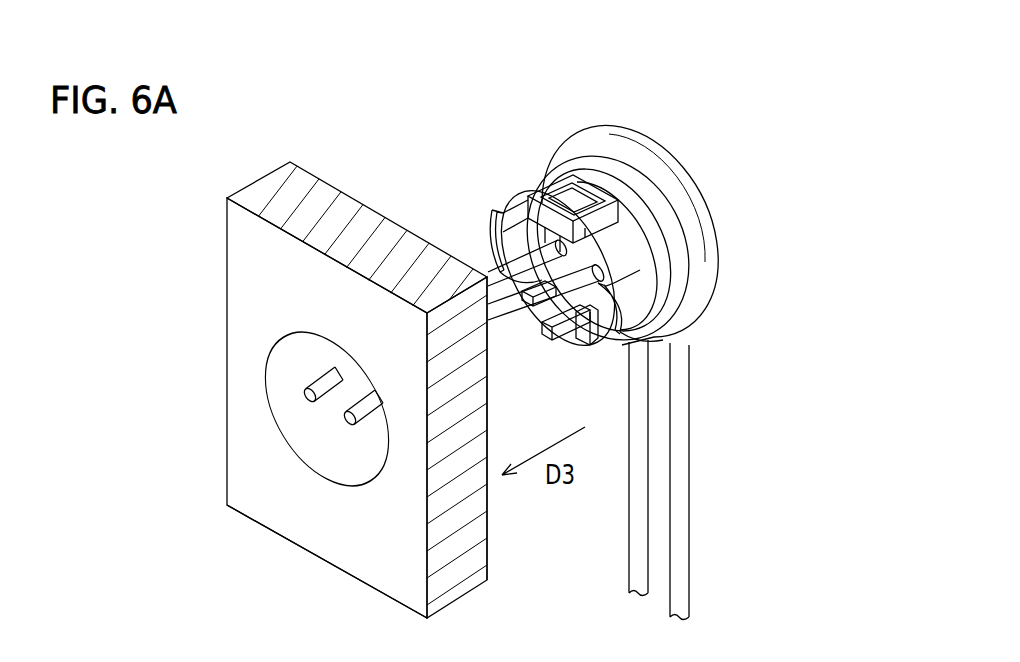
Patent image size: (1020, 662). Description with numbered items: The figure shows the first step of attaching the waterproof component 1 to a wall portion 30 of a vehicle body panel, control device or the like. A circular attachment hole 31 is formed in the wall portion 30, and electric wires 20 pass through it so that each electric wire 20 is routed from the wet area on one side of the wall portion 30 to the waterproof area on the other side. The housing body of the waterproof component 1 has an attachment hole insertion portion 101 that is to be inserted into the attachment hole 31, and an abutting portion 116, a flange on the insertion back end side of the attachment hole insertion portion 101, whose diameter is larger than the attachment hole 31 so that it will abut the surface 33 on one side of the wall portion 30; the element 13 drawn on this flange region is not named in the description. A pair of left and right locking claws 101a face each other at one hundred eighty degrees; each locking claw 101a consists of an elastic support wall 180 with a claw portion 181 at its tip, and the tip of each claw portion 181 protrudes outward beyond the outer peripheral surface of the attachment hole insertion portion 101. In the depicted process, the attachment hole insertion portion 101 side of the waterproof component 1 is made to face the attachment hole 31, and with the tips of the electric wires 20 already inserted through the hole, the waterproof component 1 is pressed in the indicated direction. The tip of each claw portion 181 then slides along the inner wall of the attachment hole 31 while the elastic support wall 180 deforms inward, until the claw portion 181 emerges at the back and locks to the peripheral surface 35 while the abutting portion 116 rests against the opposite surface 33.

The waterproof component 1 is at (585, 224).
The flange 13 is at (637, 265).
The electric wire 20 is at (307, 396).
The wall portion 30 is at (320, 222).
The attachment hole 31 is at (338, 455).
The surface 33 is at (488, 550).
The peripheral surface 35 is at (395, 570).
The attachment hole insertion portion 101 is at (610, 165).
The locking claw 101a is at (483, 217).
The abutting portion 116 is at (698, 277).
The elastic support wall 180 is at (523, 207).
The claw portion 181 is at (487, 250).